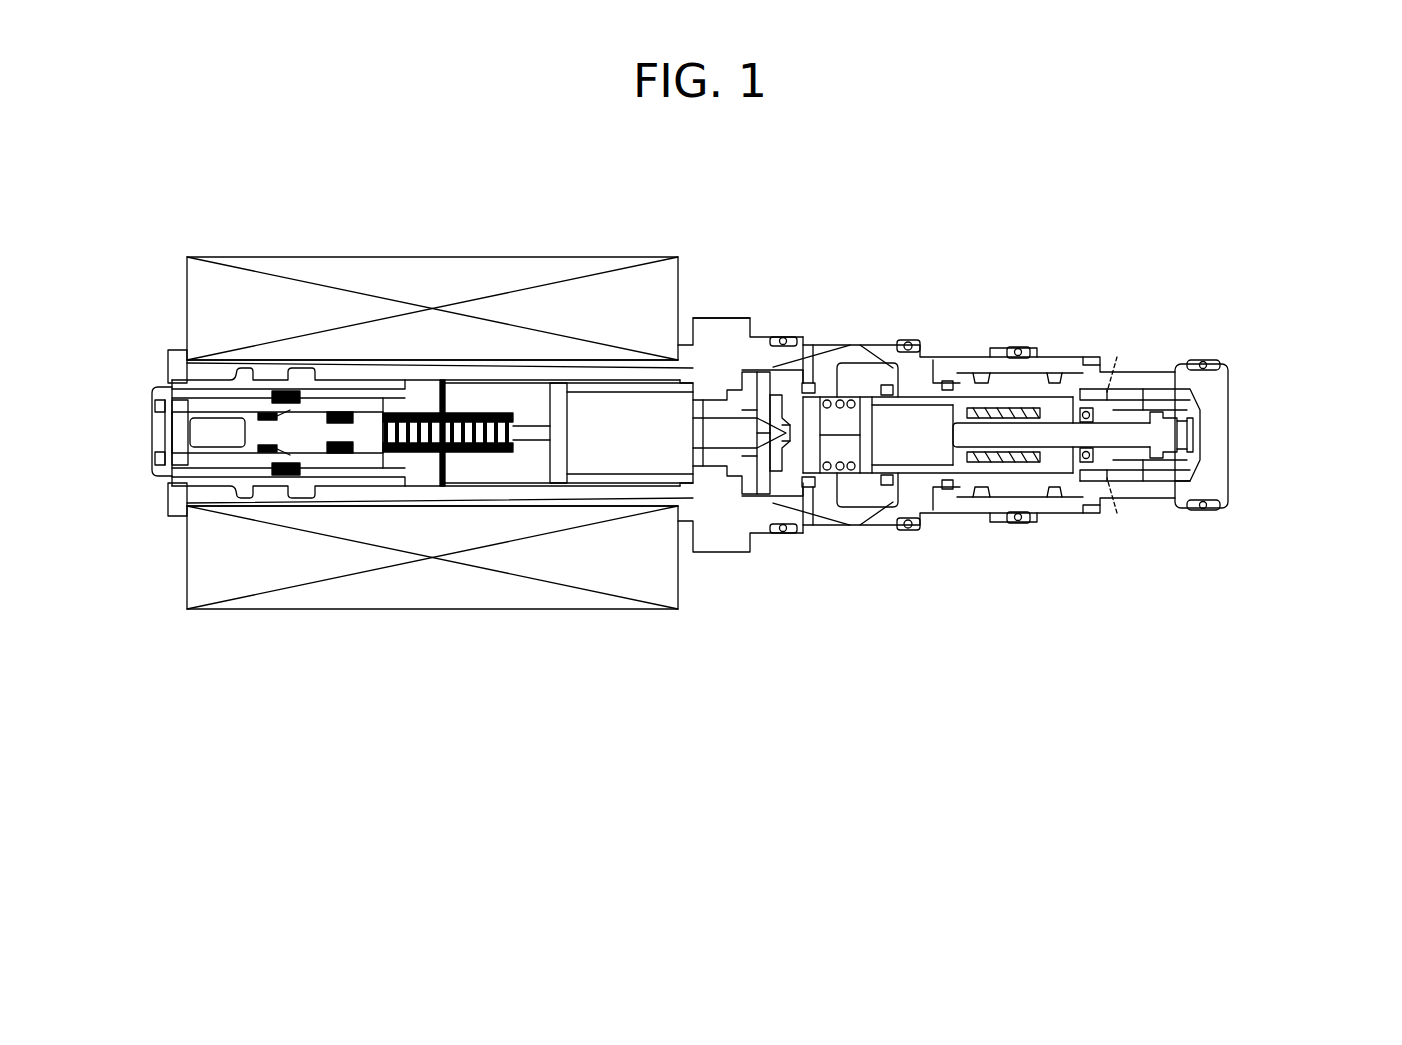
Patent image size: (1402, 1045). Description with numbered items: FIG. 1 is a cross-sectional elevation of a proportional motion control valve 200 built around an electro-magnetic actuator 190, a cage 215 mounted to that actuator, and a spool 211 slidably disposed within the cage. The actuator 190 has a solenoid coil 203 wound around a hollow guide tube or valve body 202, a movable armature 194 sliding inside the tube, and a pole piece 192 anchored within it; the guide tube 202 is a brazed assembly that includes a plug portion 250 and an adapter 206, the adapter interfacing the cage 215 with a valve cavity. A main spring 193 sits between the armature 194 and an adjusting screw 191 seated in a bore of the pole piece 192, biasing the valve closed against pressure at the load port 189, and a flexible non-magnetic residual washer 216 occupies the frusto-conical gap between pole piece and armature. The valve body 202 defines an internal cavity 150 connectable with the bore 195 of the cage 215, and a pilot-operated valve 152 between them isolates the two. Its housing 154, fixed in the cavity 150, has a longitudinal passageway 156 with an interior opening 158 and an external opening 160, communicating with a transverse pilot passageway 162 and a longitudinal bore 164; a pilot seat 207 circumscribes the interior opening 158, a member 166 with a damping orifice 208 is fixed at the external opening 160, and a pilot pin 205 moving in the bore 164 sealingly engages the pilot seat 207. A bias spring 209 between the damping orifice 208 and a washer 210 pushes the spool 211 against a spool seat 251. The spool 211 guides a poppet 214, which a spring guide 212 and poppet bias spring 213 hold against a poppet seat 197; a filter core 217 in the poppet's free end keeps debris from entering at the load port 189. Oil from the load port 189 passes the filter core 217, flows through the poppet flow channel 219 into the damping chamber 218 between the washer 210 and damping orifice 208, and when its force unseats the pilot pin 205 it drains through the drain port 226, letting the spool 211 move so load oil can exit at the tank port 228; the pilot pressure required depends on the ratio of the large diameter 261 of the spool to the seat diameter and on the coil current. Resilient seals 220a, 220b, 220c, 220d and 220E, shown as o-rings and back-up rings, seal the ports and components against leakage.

The electro-magnetic actuator 190 is at (433, 247).
The proportional motion control valve 200 is at (1093, 207).
The plug portion 250 is at (250, 377).
The resilient seal 220a is at (340, 410).
The internal cavity 150 is at (713, 383).
The pilot-operated valve 152 is at (722, 382).
The longitudinal passageway 156 is at (741, 390).
The external opening 160 is at (806, 382).
The member having a damping orifice 166 is at (877, 390).
The drain port 226 is at (857, 385).
The resilient seal 220b is at (790, 427).
The resilient seal 220c is at (913, 343).
The resilient seal 220d is at (1022, 347).
The resilient seal 220E is at (1192, 360).
The pole piece 192 is at (342, 462).
The tank port 228 is at (1106, 375).
The spool seat 251 is at (1192, 398).
The load port 189 is at (1210, 424).
The poppet seat 197 is at (1195, 450).
The filter core 217 is at (1232, 472).
The poppet 214 is at (1122, 472).
The cage 215 is at (1190, 490).
The poppet flow channel 219 is at (1065, 440).
The poppet bias spring 213 is at (1043, 465).
The spring guide 212 is at (1005, 455).
The longitudinal bore 195 is at (970, 450).
The large diameter of the spool 261 is at (940, 468).
The spool 211 is at (918, 475).
The washer 210 is at (887, 488).
The damping chamber 218 is at (848, 476).
The bias spring 209 is at (844, 475).
The damping orifice 208 is at (813, 476).
The pilot seat 207 is at (762, 482).
The adapter 206 is at (737, 487).
The pilot pin 205 is at (690, 470).
The solenoid coil 203 is at (603, 563).
The armature 194 is at (520, 465).
The guide tube 202 is at (472, 463).
The residual washer 216 is at (441, 455).
The main spring 193 is at (407, 452).
The adjusting screw 191 is at (242, 440).
The housing 154 is at (743, 482).
The interior opening 158 is at (800, 488).
The transverse pilot passageway 162 is at (790, 482).
The longitudinal bore 164 is at (731, 480).